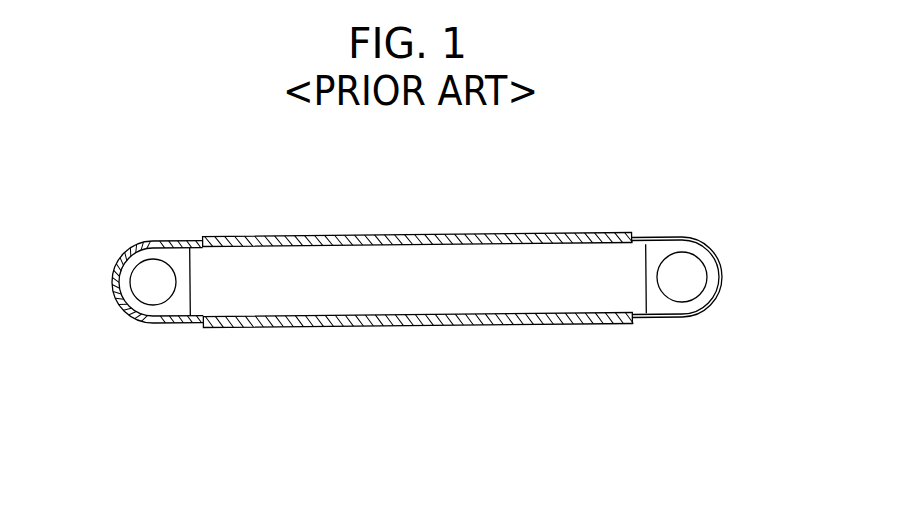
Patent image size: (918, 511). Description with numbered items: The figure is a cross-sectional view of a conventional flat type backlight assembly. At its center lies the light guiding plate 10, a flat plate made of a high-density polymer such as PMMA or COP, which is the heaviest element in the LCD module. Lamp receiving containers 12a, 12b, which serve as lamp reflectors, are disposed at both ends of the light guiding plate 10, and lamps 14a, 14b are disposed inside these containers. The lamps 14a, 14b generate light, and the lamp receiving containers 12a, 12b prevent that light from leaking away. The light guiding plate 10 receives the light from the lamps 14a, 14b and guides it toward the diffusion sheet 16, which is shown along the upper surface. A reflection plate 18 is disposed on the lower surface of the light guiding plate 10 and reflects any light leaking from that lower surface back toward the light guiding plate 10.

The light guiding plate 10 is at (563, 305).
The lamp receiving container 12a is at (142, 246).
The lamp receiving container 12b is at (688, 238).
The lamp 14a is at (140, 280).
The lamp 14b is at (700, 278).
The diffusion sheet 16 is at (468, 232).
The reflection plate 18 is at (419, 328).